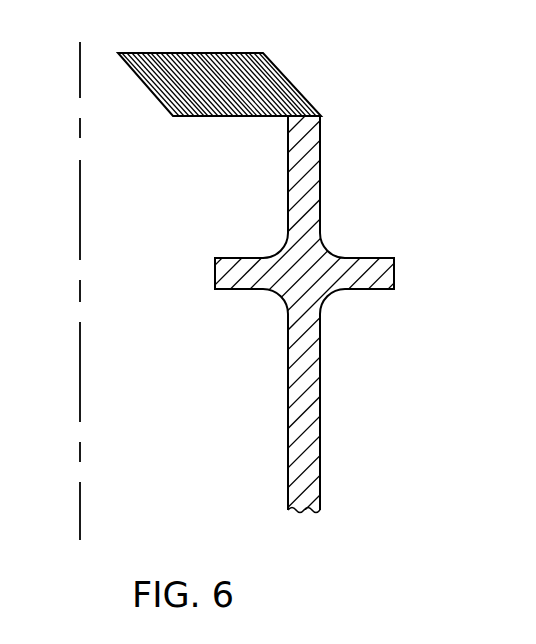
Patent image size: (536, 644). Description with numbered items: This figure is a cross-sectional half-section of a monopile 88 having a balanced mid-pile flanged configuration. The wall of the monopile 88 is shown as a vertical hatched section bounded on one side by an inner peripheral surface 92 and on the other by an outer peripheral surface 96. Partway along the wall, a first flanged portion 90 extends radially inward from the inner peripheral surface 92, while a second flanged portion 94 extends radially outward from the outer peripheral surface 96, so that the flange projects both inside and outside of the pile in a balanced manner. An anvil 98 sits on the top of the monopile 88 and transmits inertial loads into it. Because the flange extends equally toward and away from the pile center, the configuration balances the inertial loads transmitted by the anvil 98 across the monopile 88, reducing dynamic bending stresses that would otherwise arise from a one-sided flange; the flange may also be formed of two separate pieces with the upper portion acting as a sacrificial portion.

The monopile 88 is at (321, 418).
The first flanged portion 90 is at (236, 256).
The inner peripheral surface 92 is at (288, 352).
The second flanged portion 94 is at (373, 256).
The outer peripheral surface 96 is at (320, 356).
The anvil 98 is at (271, 88).